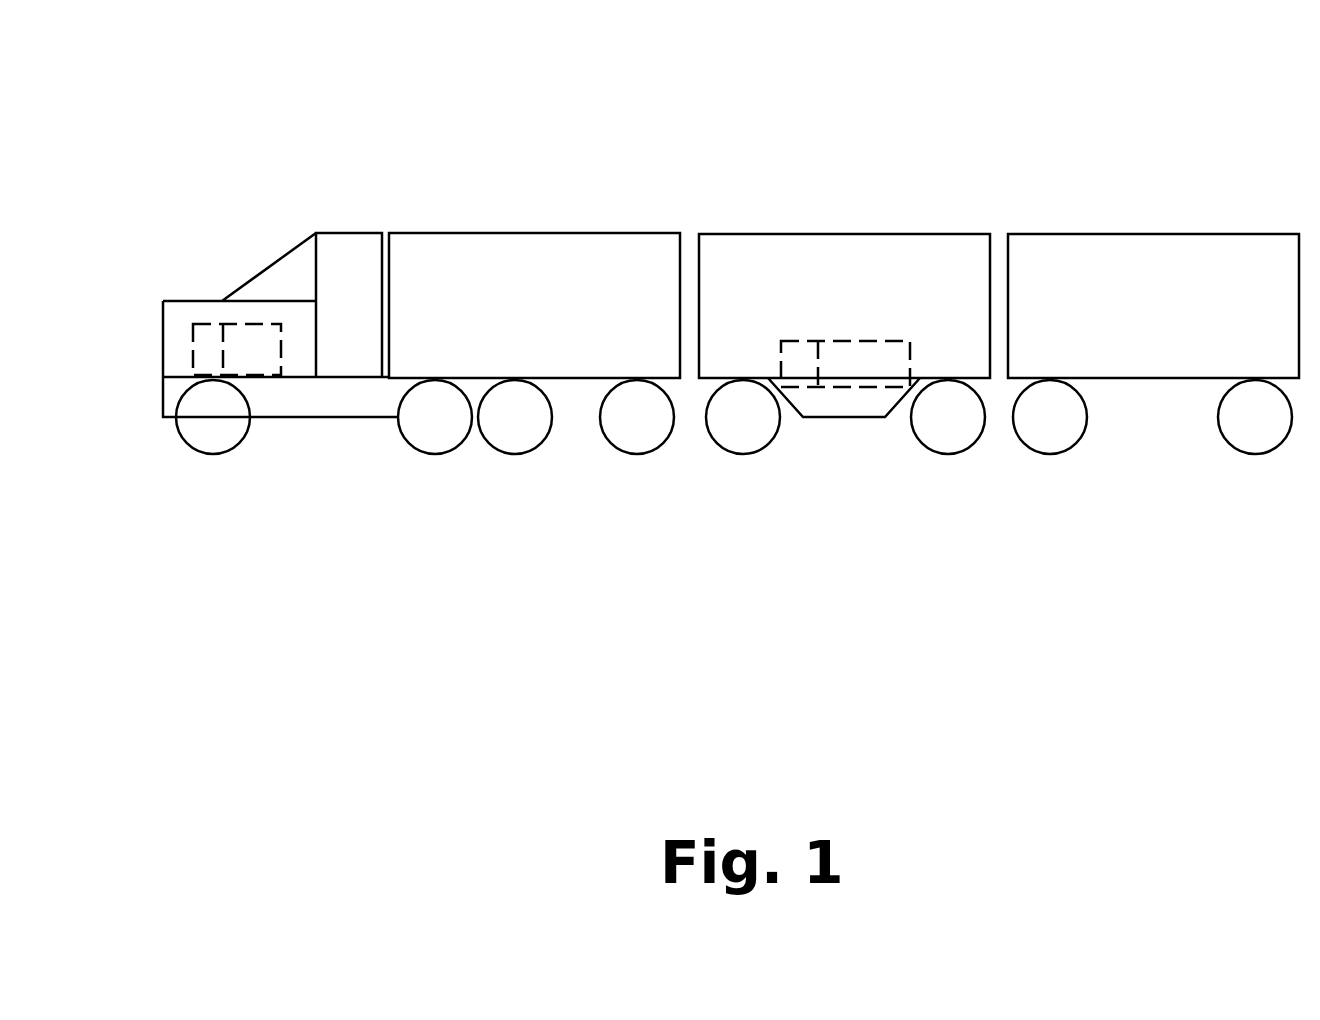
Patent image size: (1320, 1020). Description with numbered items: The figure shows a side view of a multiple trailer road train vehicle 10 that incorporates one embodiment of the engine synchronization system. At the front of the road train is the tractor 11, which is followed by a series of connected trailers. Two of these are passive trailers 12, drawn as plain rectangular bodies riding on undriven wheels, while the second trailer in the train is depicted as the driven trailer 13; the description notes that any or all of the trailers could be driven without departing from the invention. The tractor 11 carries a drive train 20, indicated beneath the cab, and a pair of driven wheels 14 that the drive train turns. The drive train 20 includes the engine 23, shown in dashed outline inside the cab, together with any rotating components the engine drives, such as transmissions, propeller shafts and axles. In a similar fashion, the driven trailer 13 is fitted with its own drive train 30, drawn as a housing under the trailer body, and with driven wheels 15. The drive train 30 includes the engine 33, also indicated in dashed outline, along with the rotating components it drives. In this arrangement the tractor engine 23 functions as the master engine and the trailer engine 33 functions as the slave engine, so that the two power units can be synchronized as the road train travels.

The multiple trailer road train vehicle 10 is at (730, 484).
The tractor 11 is at (360, 190).
The passive trailers 12 is at (553, 233).
The driven trailer 13 is at (855, 233).
The driven wheels 14 is at (432, 452).
The driven wheels 15 is at (945, 452).
The drive train 20 is at (255, 380).
The engine 23 is at (200, 322).
The drive train 30 is at (860, 388).
The engine 33 is at (798, 341).